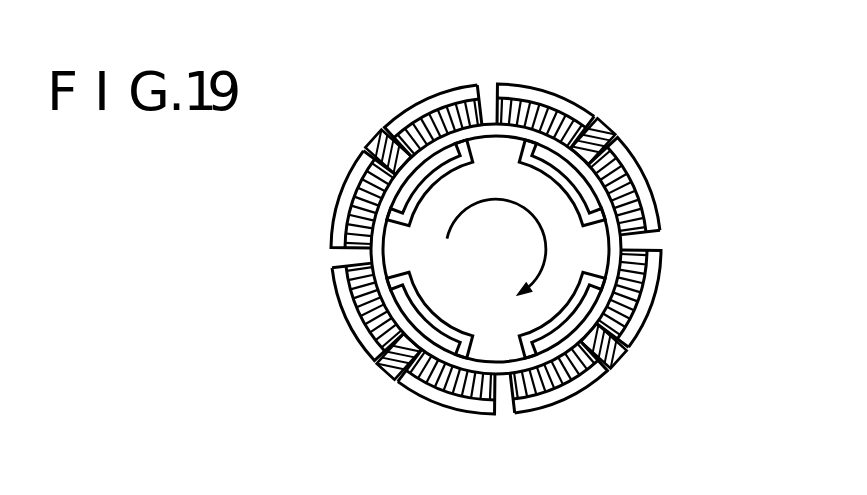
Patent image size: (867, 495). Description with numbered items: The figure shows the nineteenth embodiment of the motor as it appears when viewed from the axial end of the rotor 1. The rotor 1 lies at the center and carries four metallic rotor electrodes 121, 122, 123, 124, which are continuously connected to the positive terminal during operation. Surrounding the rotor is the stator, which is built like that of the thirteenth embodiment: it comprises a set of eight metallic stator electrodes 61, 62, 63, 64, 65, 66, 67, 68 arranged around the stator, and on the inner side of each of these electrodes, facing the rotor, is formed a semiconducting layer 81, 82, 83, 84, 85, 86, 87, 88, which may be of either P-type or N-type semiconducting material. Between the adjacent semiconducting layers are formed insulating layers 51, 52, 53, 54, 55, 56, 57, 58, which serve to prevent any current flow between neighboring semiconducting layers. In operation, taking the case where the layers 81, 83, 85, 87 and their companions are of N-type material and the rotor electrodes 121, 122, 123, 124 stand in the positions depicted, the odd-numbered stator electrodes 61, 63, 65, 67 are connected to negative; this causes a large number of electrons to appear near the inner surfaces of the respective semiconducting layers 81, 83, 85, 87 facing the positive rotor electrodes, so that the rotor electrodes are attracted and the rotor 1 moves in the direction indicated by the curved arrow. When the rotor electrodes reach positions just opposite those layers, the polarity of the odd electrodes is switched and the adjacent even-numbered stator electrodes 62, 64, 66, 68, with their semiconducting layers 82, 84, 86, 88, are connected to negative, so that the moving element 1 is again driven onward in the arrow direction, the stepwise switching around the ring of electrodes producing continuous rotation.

The rotor 1 is at (510, 130).
The insulating layer 51 is at (482, 103).
The insulating layer 52 is at (592, 130).
The insulating layer 53 is at (633, 243).
The insulating layer 54 is at (606, 347).
The insulating layer 55 is at (502, 392).
The insulating layer 56 is at (397, 362).
The insulating layer 57 is at (350, 258).
The insulating layer 58 is at (380, 148).
The stator electrode 61 is at (440, 103).
The stator electrode 62 is at (503, 112).
The stator electrode 63 is at (648, 198).
The stator electrode 64 is at (620, 340).
The stator electrode 65 is at (540, 402).
The stator electrode 66 is at (418, 388).
The stator electrode 67 is at (340, 287).
The stator electrode 68 is at (357, 168).
The semiconducting layer 81 is at (395, 112).
The semiconducting layer 82 is at (573, 123).
The semiconducting layer 83 is at (625, 168).
The semiconducting layer 84 is at (648, 282).
The semiconducting layer 85 is at (582, 385).
The semiconducting layer 86 is at (470, 392).
The semiconducting layer 87 is at (340, 323).
The semiconducting layer 88 is at (333, 235).
The rotor electrode 121 is at (623, 148).
The rotor electrode 122 is at (637, 335).
The rotor electrode 123 is at (360, 348).
The rotor electrode 124 is at (357, 198).